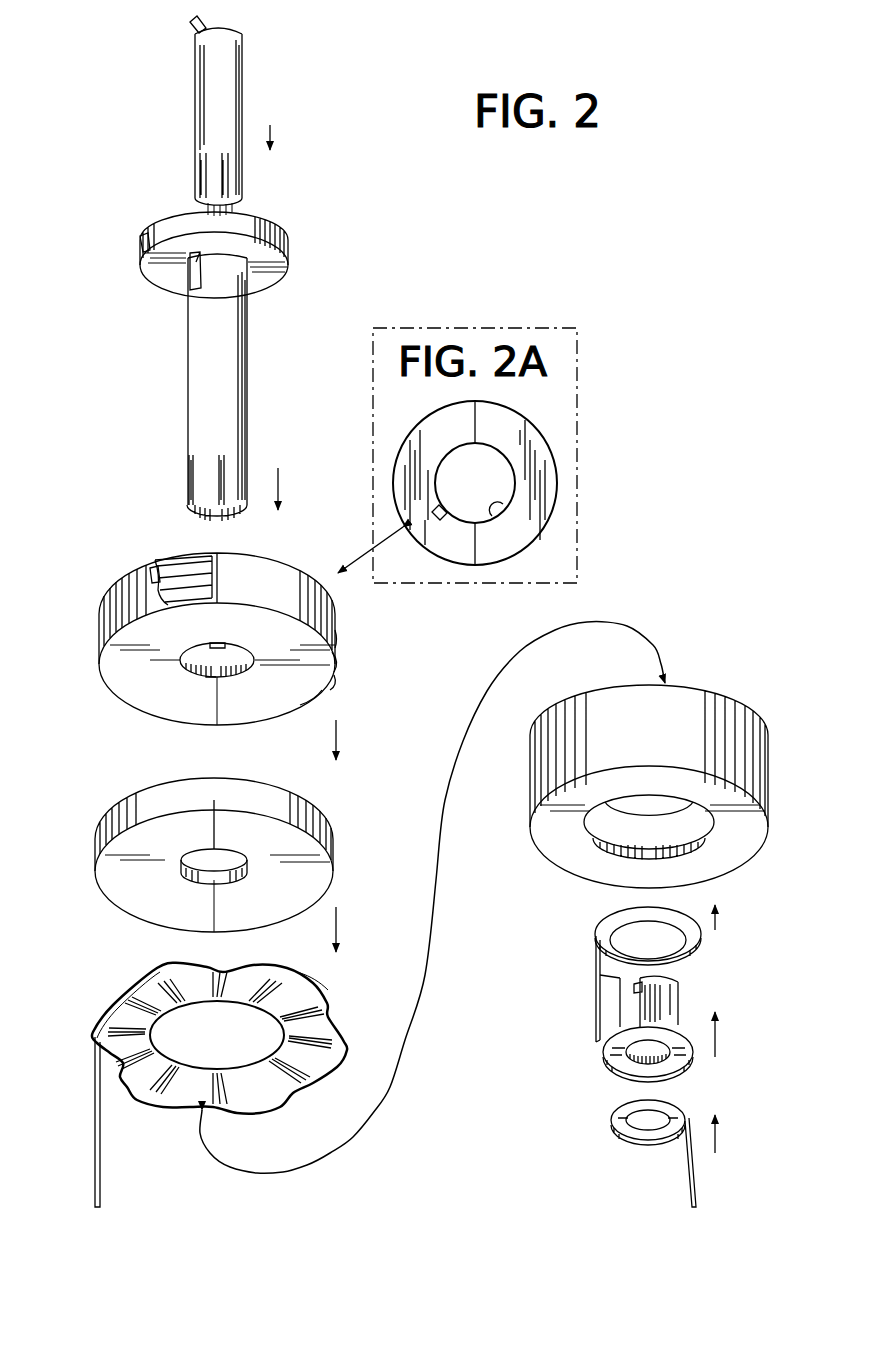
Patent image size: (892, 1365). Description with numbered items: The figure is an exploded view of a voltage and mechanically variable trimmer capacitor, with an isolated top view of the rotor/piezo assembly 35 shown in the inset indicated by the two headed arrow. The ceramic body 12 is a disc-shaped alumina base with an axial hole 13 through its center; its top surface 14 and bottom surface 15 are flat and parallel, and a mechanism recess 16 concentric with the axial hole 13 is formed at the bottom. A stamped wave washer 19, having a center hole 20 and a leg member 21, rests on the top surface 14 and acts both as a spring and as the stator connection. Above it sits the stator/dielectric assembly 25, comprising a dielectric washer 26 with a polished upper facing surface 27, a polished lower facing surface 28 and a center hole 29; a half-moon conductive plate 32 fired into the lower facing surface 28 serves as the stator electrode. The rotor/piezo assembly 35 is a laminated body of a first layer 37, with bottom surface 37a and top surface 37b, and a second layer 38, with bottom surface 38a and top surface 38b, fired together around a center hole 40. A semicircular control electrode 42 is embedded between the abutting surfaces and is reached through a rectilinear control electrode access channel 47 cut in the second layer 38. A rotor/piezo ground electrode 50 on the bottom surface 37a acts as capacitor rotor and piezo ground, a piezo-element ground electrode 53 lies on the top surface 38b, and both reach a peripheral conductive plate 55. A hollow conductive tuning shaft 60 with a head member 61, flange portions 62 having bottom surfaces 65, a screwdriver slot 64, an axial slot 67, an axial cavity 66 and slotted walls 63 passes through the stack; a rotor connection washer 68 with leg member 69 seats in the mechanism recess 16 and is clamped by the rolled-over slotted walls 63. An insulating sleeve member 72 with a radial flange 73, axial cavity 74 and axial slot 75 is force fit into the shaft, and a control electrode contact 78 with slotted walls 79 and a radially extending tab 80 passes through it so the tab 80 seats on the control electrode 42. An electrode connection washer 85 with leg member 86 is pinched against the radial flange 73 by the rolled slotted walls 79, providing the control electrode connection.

In FIG. 2, the ceramic body 12 is at (629, 803).
In FIG. 2, the axial hole 13 is at (648, 818).
In FIG. 2, the top surface 14 is at (552, 710).
In FIG. 2, the bottom surface 15 is at (545, 842).
In FIG. 2, the mechanism recess 16 is at (640, 862).
In FIG. 2, the stamped wave washer 19 is at (233, 1085).
In FIG. 2, the center hole 20 is at (292, 1090).
In FIG. 2, the leg member 21 is at (100, 1157).
In FIG. 2, the stator/dielectric assembly 25 is at (210, 855).
In FIG. 2, the dielectric washer 26 is at (118, 812).
In FIG. 2, the upper facing surface 27 is at (312, 806).
In FIG. 2, the lower facing surface 28 is at (315, 856).
In FIG. 2, the center hole 29 is at (245, 874).
In FIG. 2, the conductive plate 32 is at (110, 872).
In FIG. 2, the rotor/piezo assembly 35 is at (342, 672).
In FIG. 2, the first layer 37 is at (342, 672).
In FIG. 2, the bottom surface 37a is at (318, 683).
In FIG. 2, the top surface 37b is at (340, 642).
In FIG. 2, the second layer 38 is at (222, 632).
In FIG. 2, the bottom surface 38a is at (338, 628).
In FIG. 2A, the bottom surface 38a is at (525, 435).
In FIG. 2, the top surface 38b is at (280, 562).
In FIG. 2, the center hole 40 is at (215, 675).
In FIG. 2A, the center hole 40 is at (500, 515).
In FIG. 2, the control electrode 42 is at (150, 575).
In FIG. 2A, the control electrode 42 is at (443, 513).
In FIG. 2A, the control electrode access channel 47 is at (438, 522).
In FIG. 2, the rotor/piezo ground electrode 50 is at (120, 672).
In FIG. 2, the piezo-element ground electrode 53 is at (170, 556).
In FIG. 2A, the piezo-element ground electrode 53 is at (432, 425).
In FIG. 2, the peripheral conductive plate 55 is at (110, 612).
In FIG. 2, the tuning shaft 60 is at (204, 386).
In FIG. 2, the head member 61 is at (215, 258).
In FIG. 2, the flange portions 62 is at (289, 258).
In FIG. 2, the slotted walls 63 is at (232, 476).
In FIG. 2, the screwdriver slot 64 is at (141, 238).
In FIG. 2, the bottom surfaces 65 is at (270, 283).
In FIG. 2, the axial cavity 66 is at (222, 520).
In FIG. 2, the axial slot 67 is at (193, 290).
In FIG. 2, the rotor connection washer 68 is at (595, 928).
In FIG. 2, the leg member 69 is at (596, 965).
In FIG. 2, the sleeve member 72 is at (638, 1004).
In FIG. 2, the radial flange 73 is at (603, 1052).
In FIG. 2, the axial cavity 74 is at (640, 1063).
In FIG. 2, the axial slot 75 is at (620, 985).
In FIG. 2, the control electrode contact 78 is at (206, 116).
In FIG. 2, the slotted walls 79 is at (229, 195).
In FIG. 2, the tab 80 is at (195, 30).
In FIG. 2, the electrode connection washer 85 is at (624, 1153).
In FIG. 2, the leg member 86 is at (685, 1183).